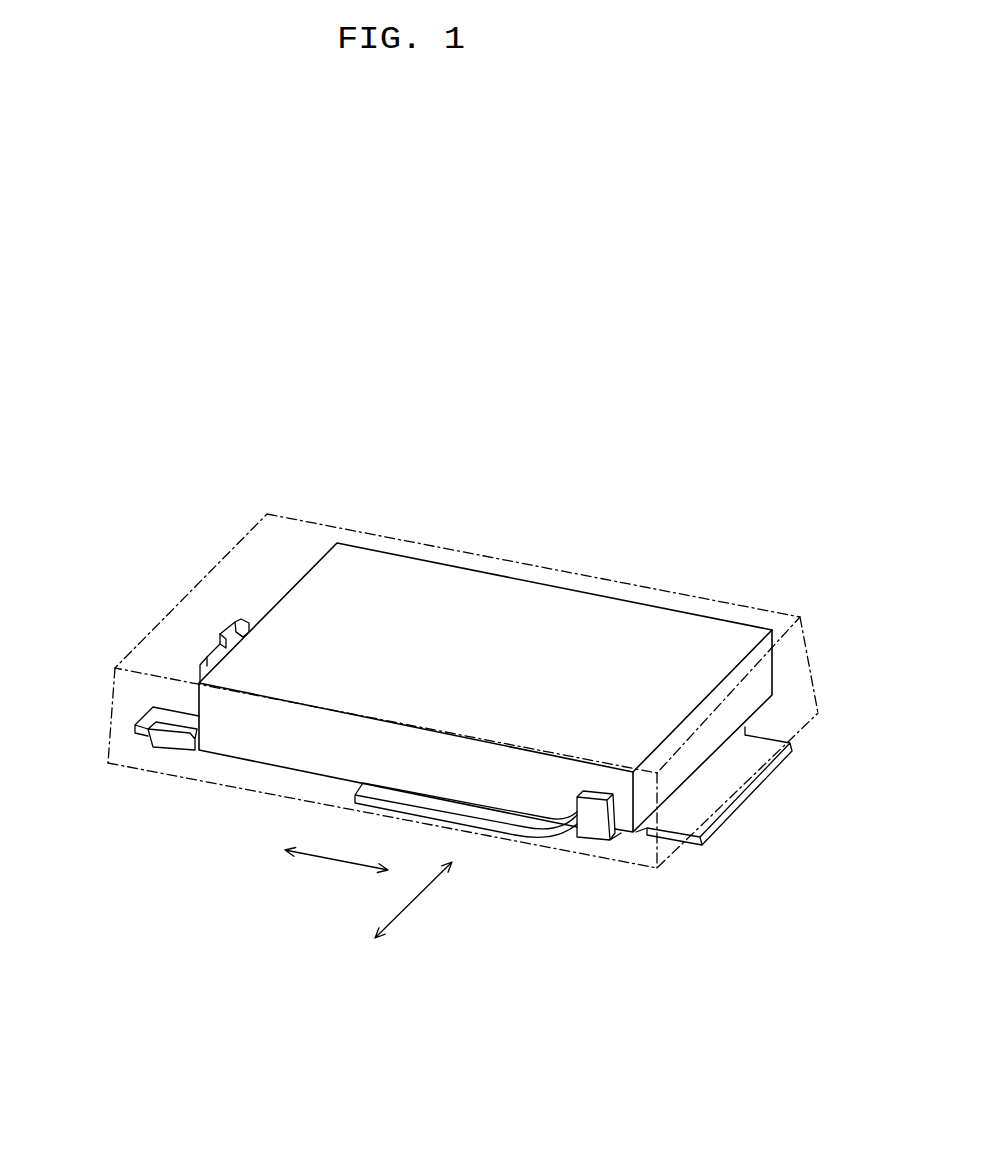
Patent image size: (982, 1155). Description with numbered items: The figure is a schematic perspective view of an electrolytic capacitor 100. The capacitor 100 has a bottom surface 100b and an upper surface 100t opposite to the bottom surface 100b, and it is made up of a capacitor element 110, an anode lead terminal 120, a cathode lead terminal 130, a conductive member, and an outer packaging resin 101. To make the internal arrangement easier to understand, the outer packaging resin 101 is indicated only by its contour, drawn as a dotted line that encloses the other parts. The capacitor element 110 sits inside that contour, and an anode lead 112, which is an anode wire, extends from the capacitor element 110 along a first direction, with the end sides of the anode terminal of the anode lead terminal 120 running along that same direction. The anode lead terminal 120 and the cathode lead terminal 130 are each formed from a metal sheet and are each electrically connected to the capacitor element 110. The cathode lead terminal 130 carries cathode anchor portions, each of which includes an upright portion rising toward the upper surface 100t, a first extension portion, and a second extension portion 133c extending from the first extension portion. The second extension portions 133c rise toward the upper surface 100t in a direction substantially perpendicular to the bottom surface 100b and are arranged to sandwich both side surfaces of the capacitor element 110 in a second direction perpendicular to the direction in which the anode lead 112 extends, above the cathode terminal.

The electrolytic capacitor 100 is at (142, 493).
The upper surface 100t is at (284, 530).
The bottom surface 100b is at (617, 866).
The outer packaging resin 101 is at (494, 556).
The capacitor element 110 is at (576, 592).
The anode lead 112 is at (213, 640).
The anode lead terminal 120 is at (140, 720).
The cathode lead terminal 130 is at (728, 778).
The second extension portion 133c is at (580, 810).